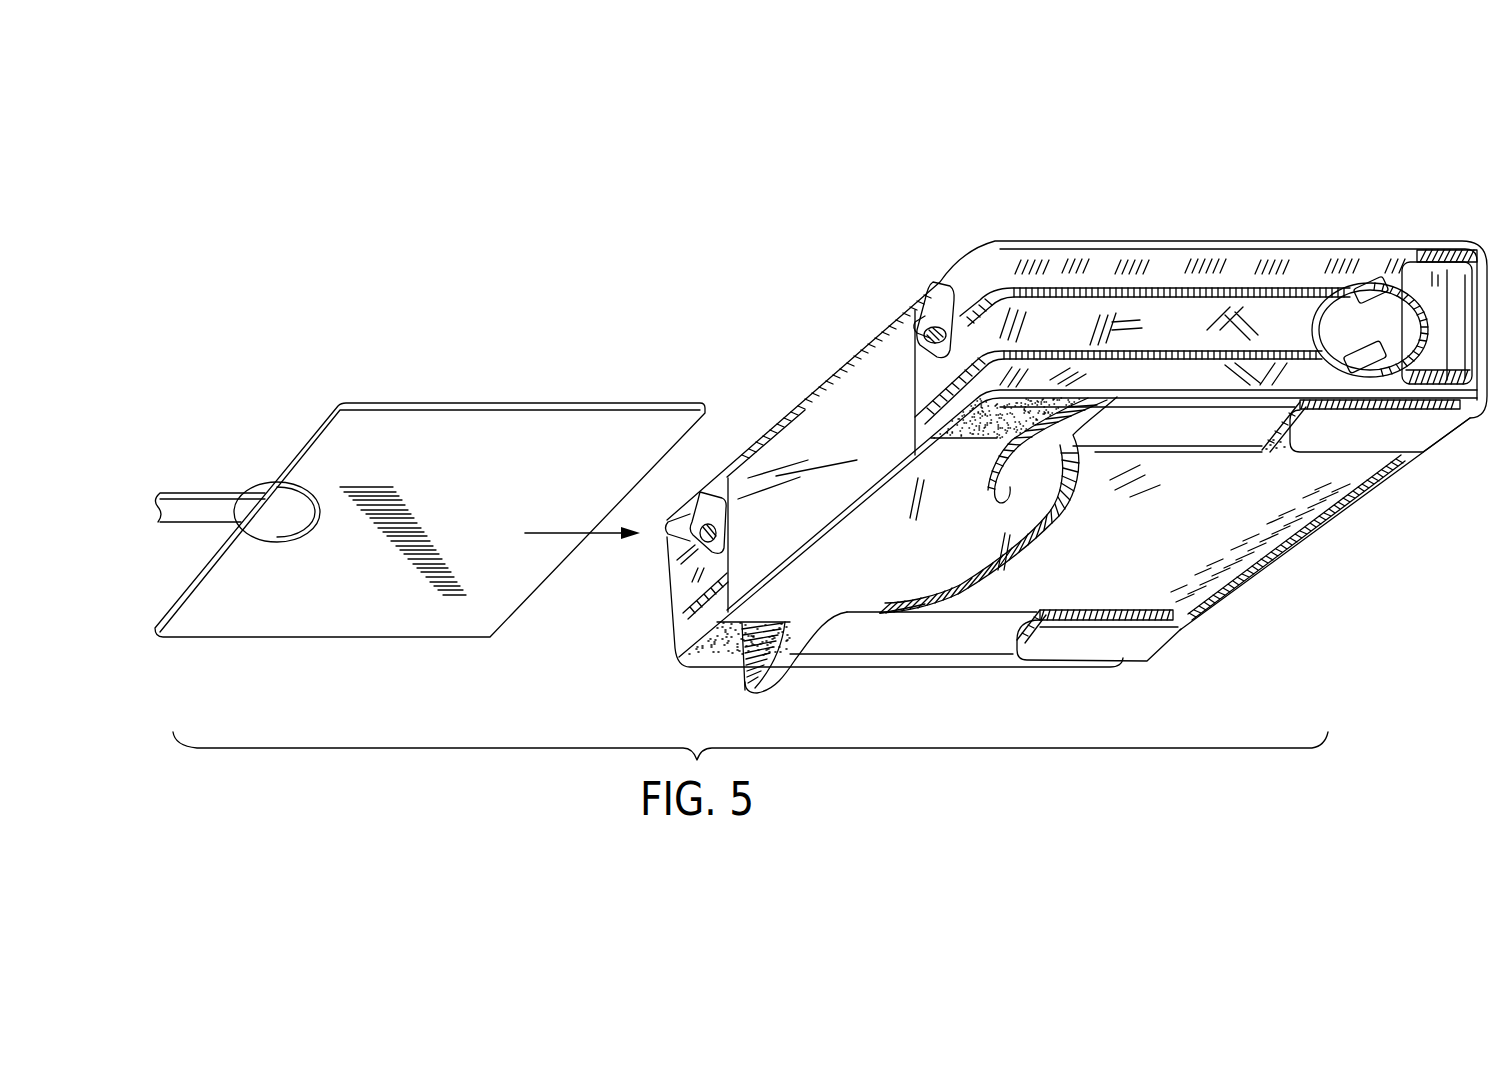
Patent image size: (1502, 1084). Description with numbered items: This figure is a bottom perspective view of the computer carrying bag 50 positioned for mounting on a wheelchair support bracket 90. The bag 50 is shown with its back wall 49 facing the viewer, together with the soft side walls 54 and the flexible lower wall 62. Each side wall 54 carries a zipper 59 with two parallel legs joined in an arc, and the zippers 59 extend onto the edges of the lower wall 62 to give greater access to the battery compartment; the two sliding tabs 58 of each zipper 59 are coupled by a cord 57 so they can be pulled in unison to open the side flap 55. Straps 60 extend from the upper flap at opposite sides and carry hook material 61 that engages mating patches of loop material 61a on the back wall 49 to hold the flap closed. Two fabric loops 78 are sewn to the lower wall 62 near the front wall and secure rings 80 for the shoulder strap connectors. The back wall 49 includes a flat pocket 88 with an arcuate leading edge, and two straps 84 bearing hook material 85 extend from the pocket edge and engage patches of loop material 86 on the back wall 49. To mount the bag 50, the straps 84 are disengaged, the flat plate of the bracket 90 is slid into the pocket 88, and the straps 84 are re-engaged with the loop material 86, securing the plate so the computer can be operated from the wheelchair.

The back wall 49 is at (852, 579).
The computer carrying bag 50 is at (1192, 160).
The side wall 54 is at (1308, 268).
The side flap 55 is at (1118, 325).
The cord 57 is at (1310, 335).
The sliding tab 58 is at (1372, 283).
The zipper 59 is at (1248, 290).
The strap 60 is at (1348, 446).
The hook material 61 is at (1125, 610).
The loop material 61a is at (1268, 450).
The lower wall 62 is at (836, 442).
The loop 78 is at (934, 300).
The ring 80 is at (917, 330).
The strap 84 is at (1005, 497).
The hook material 85 is at (990, 462).
The loop material 86 is at (933, 458).
The flat pocket 88 is at (983, 590).
The support bracket 90 is at (536, 402).